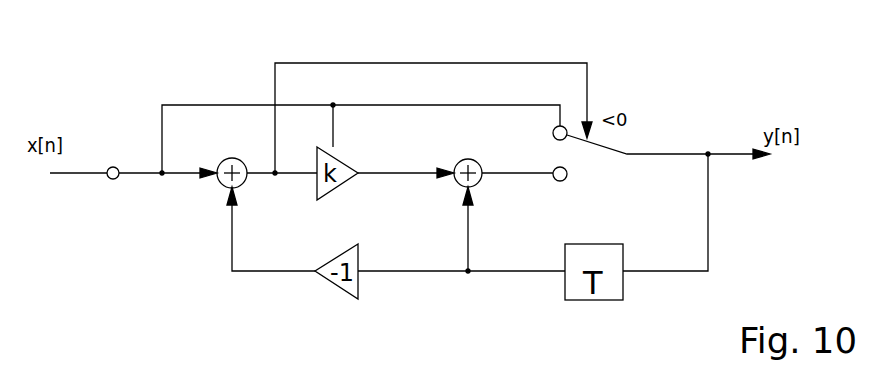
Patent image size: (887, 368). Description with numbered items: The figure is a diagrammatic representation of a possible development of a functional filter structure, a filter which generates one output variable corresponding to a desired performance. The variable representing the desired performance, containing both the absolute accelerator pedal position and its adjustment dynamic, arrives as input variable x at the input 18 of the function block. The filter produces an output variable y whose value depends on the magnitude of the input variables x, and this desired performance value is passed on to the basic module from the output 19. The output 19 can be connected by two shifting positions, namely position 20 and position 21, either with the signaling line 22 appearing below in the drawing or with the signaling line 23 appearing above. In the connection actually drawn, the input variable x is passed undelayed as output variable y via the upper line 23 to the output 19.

The input 18 is at (114, 166).
The output 19 is at (652, 152).
The shifting position 20 is at (562, 126).
The shifting position 21 is at (555, 167).
The signaling line 22 is at (497, 173).
The signaling line 23 is at (347, 105).